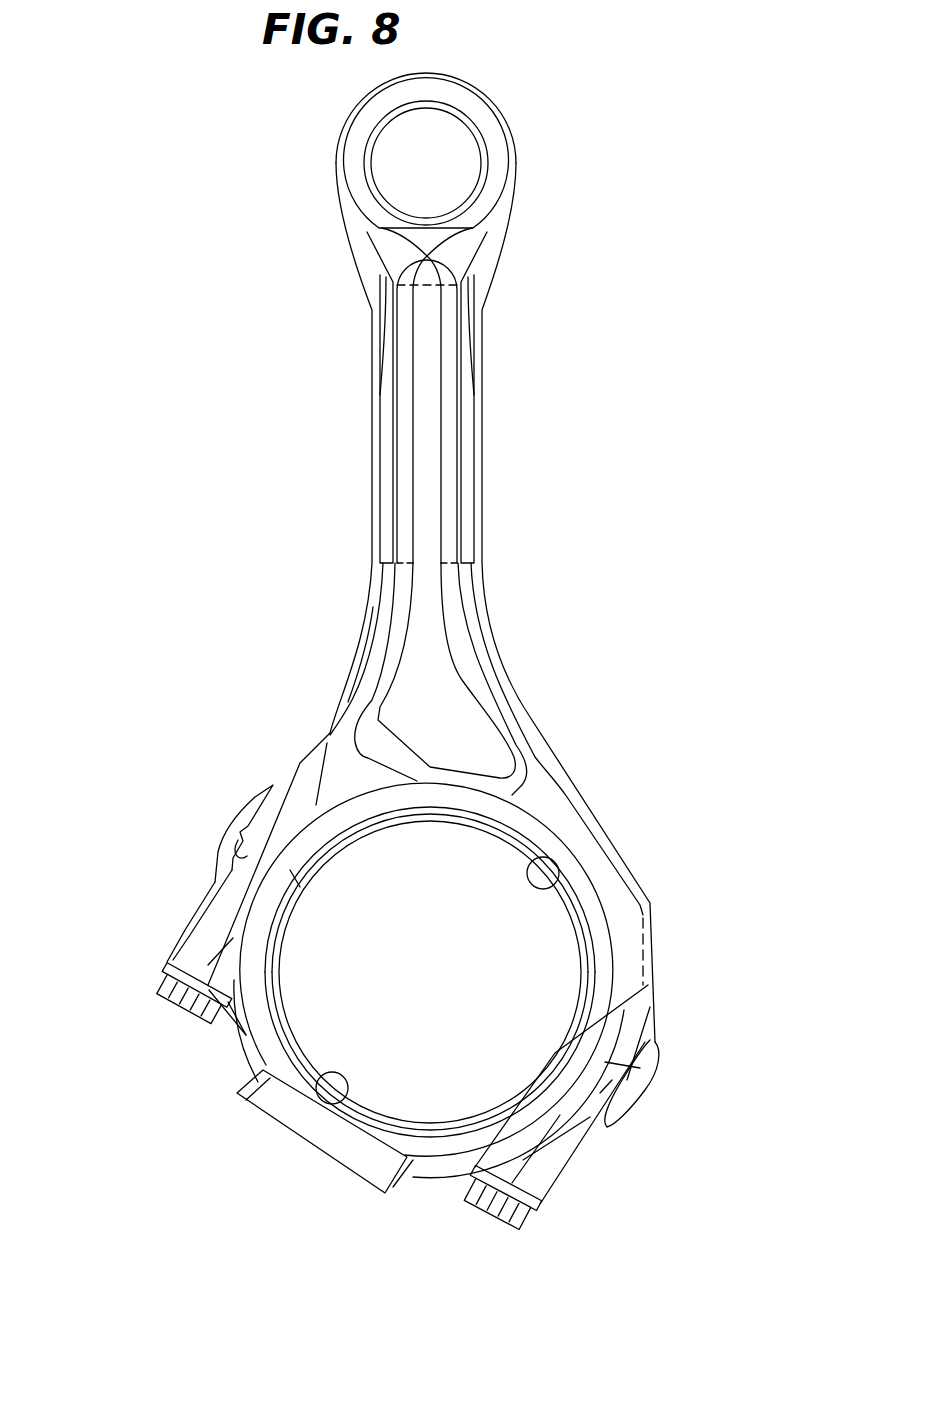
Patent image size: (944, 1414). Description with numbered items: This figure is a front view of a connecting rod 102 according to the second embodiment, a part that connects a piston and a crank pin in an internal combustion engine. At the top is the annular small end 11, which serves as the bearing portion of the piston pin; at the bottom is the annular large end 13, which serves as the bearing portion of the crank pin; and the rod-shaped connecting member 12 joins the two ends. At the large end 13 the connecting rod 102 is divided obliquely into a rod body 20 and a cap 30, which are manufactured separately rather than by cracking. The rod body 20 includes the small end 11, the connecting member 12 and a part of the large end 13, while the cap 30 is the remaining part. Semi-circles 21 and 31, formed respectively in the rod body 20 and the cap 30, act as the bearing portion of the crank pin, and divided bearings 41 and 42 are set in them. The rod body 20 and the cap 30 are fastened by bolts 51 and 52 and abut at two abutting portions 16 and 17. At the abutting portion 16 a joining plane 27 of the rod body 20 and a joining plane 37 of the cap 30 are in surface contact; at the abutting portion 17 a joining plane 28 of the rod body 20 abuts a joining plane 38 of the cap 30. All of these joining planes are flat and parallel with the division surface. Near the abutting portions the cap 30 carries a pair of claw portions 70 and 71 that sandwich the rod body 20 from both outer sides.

The connecting rod 102 is at (292, 379).
The small end 11 is at (518, 160).
The connecting member 12 is at (483, 507).
The large end 13 is at (657, 970).
The abutting portion 16 is at (175, 855).
The abutting portion 17 is at (614, 1104).
The rod body 20 is at (374, 538).
The semi-circle 21 is at (556, 888).
The joining plane 27 is at (247, 856).
The joining plane 28 is at (600, 1093).
The cap 30 is at (178, 942).
The semi-circle 31 is at (333, 1125).
The joining plane 37 is at (300, 887).
The joining plane 38 is at (605, 1062).
The divided bearing 41 is at (418, 830).
The divided bearing 42 is at (420, 1122).
The bolt 51 is at (185, 1027).
The bolt 52 is at (486, 1222).
The claw portion 70 is at (273, 787).
The claw portion 71 is at (650, 1083).